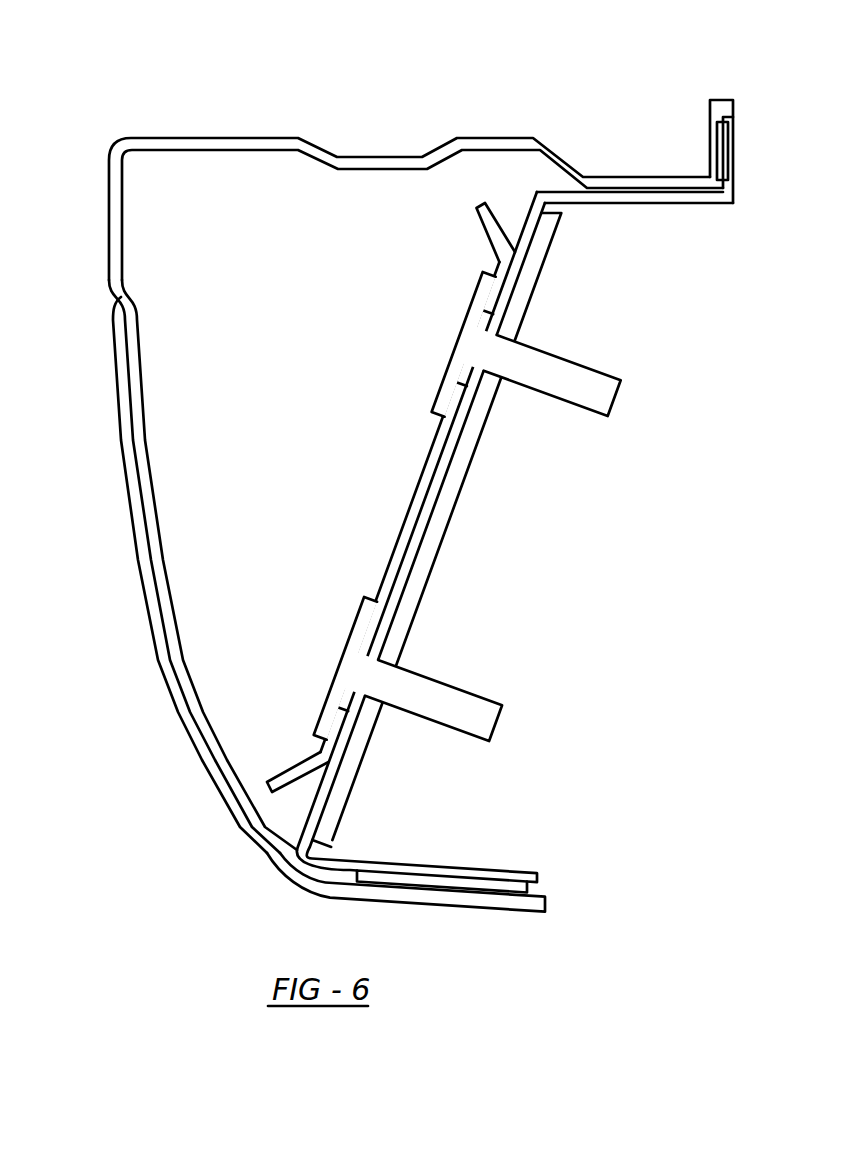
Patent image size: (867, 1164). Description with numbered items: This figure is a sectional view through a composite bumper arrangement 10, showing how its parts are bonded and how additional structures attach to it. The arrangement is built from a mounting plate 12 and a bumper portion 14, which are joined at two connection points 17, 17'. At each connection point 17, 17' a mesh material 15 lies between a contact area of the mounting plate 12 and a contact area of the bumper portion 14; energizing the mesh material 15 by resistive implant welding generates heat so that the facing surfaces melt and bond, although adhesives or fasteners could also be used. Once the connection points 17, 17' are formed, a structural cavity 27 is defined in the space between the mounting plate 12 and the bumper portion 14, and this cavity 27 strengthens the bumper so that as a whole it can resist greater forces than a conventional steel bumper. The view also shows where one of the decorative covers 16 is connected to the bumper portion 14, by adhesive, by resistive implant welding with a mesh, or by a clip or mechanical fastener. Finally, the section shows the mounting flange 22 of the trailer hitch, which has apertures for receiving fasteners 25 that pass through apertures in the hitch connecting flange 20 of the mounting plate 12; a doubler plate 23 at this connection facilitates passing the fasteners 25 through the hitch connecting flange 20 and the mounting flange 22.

The composite bumper arrangement 10 is at (188, 89).
The mounting plate 12 is at (672, 197).
The bumper portion 14 is at (113, 192).
The mesh material 15 is at (720, 148).
The decorative cover 16 is at (165, 673).
The connection point 17 is at (409, 929).
The connection point 17' is at (749, 117).
The hitch connecting flange 20 is at (428, 503).
The mounting flange 22 is at (403, 622).
The doubler plate 23 is at (490, 217).
The fasteners 25 is at (472, 344).
The structural cavity 27 is at (276, 391).